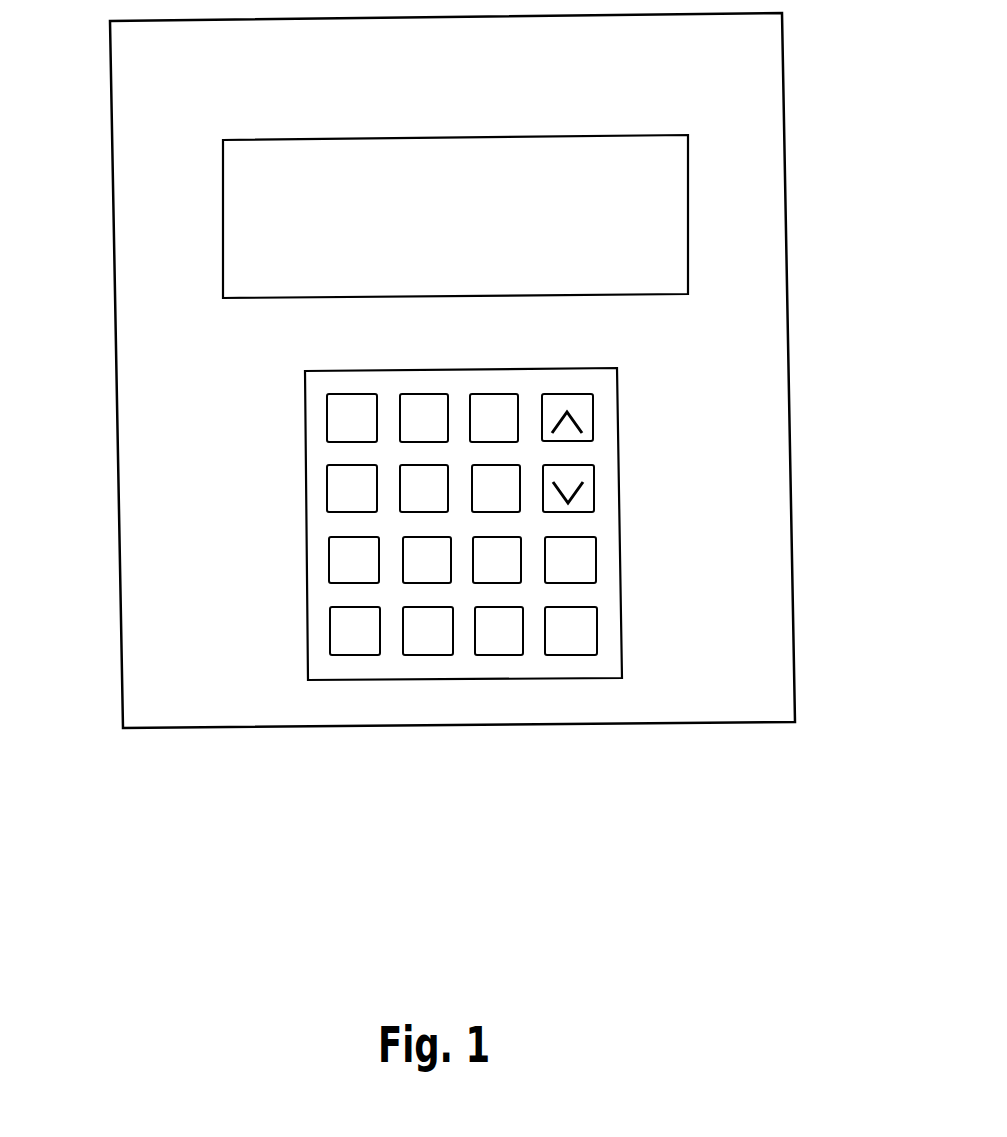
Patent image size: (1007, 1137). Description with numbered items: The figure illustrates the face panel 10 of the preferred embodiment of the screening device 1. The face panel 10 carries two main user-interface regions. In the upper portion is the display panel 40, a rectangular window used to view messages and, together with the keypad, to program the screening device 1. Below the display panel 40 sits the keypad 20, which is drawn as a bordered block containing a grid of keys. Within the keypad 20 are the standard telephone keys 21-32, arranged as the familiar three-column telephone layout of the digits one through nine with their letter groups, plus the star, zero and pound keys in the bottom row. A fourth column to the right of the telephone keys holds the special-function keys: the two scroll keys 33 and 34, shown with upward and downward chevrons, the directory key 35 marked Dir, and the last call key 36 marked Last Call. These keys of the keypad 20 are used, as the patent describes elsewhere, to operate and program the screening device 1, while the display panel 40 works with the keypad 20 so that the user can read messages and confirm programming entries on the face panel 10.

The screening device 1 is at (501, 370).
The face panel 10 is at (741, 328).
The keypad 20 is at (293, 383).
The standard telephone keys 21-32 is at (511, 670).
The scroll key 33 is at (608, 413).
The scroll key 34 is at (608, 485).
The directory key 35 is at (610, 556).
The last call key 36 is at (611, 625).
The display panel 40 is at (668, 210).